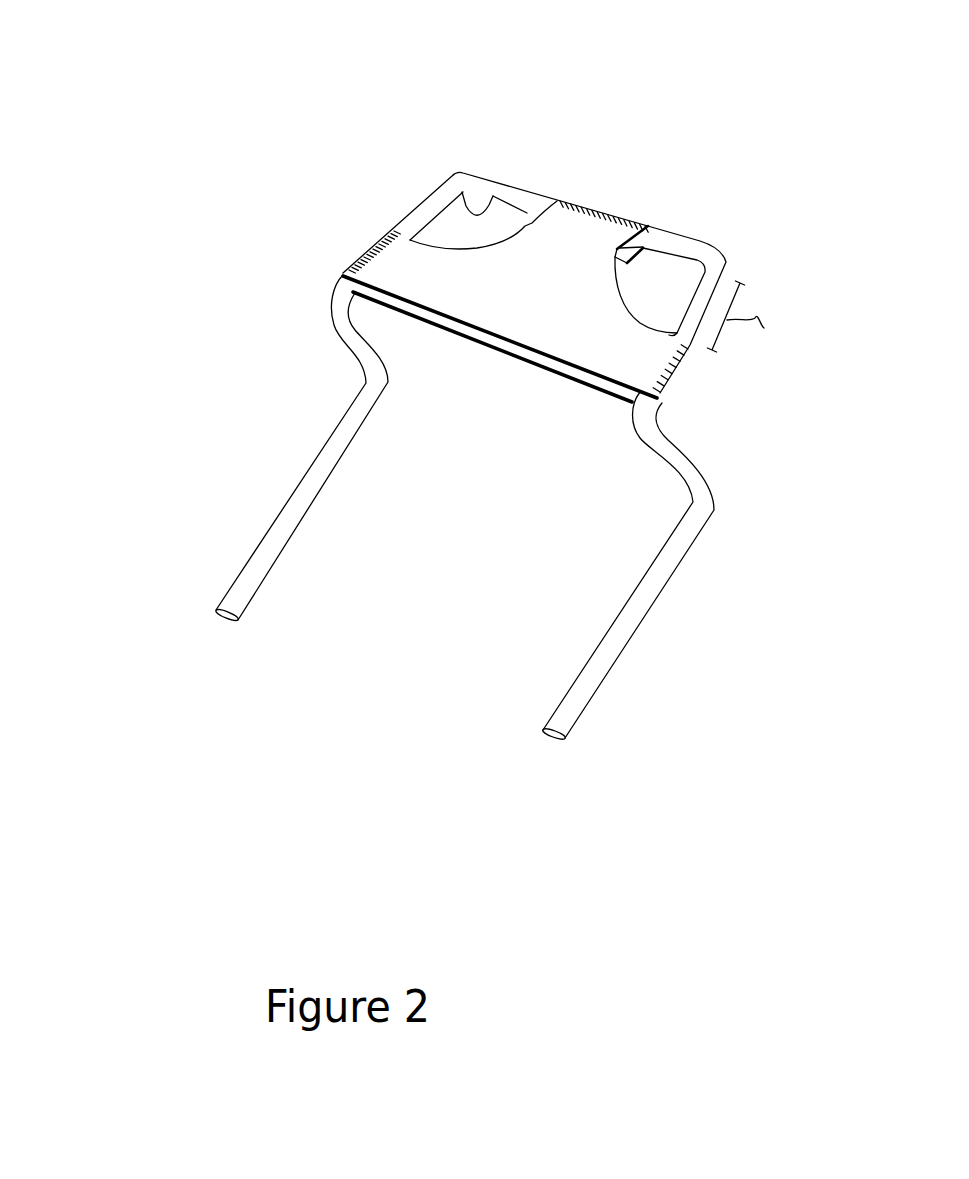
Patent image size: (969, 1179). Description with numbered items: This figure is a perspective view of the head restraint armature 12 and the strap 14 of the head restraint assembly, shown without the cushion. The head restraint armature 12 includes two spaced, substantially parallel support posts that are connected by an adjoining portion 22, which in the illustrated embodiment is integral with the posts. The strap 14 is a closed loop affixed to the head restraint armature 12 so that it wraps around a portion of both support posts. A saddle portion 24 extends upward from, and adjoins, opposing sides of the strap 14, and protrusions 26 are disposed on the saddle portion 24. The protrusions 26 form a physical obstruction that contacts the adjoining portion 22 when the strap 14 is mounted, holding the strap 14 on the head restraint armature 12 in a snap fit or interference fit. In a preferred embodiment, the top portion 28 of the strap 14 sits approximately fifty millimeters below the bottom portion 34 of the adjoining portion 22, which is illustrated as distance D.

The head restraint armature 12 is at (219, 424).
The strap 14 is at (363, 248).
The adjoining portion 22 is at (702, 255).
The saddle portion 24 is at (592, 207).
The protrusions 26 is at (533, 225).
The top portion 28 is at (440, 247).
The bottom portion 34 is at (463, 190).